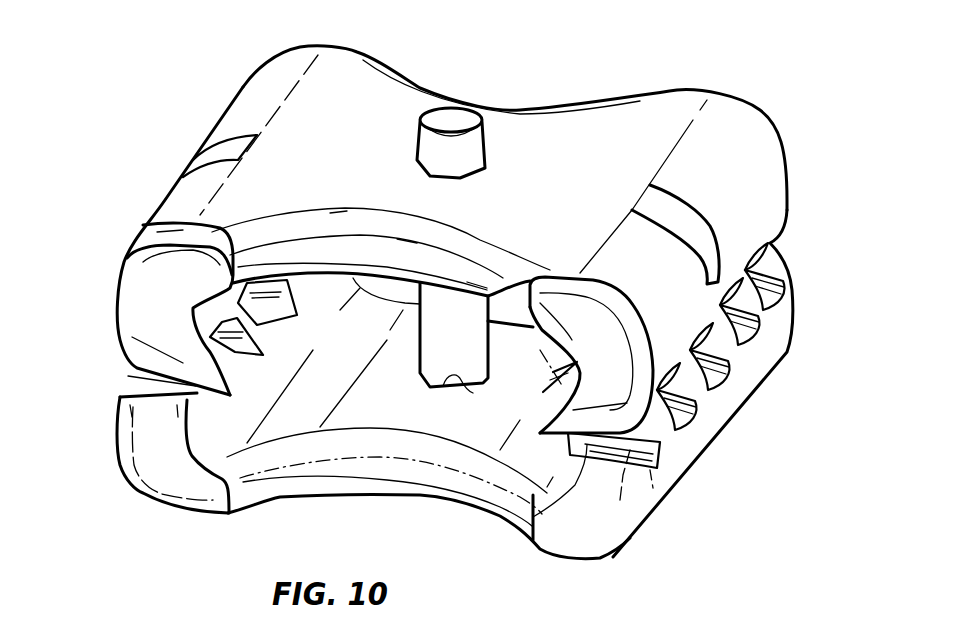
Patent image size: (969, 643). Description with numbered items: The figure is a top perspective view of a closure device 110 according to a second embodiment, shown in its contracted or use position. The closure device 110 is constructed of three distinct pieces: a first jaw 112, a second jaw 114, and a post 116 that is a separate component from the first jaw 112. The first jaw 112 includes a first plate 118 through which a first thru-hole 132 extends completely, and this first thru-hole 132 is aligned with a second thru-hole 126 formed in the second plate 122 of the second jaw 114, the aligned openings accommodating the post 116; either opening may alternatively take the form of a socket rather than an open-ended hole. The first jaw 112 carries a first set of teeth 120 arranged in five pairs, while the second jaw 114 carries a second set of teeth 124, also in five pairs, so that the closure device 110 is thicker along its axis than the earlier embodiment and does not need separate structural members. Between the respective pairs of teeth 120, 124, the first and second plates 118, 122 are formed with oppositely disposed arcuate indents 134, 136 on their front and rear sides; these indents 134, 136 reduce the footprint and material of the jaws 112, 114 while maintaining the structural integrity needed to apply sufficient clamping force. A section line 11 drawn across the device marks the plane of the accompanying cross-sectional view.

The closure device 110 is at (698, 40).
The first jaw 112 is at (705, 463).
The second jaw 114 is at (160, 198).
The post 116 is at (416, 345).
The first plate 118 is at (363, 417).
The first set of teeth 120 is at (220, 364).
The second plate 122 is at (393, 84).
The second set of teeth 124 is at (562, 435).
The second thru-hole 126 is at (447, 175).
The first thru-hole 132 is at (473, 393).
The indent 134 is at (501, 320).
The indent 136 is at (522, 108).
The section line 11- 11 is at (183, 89).